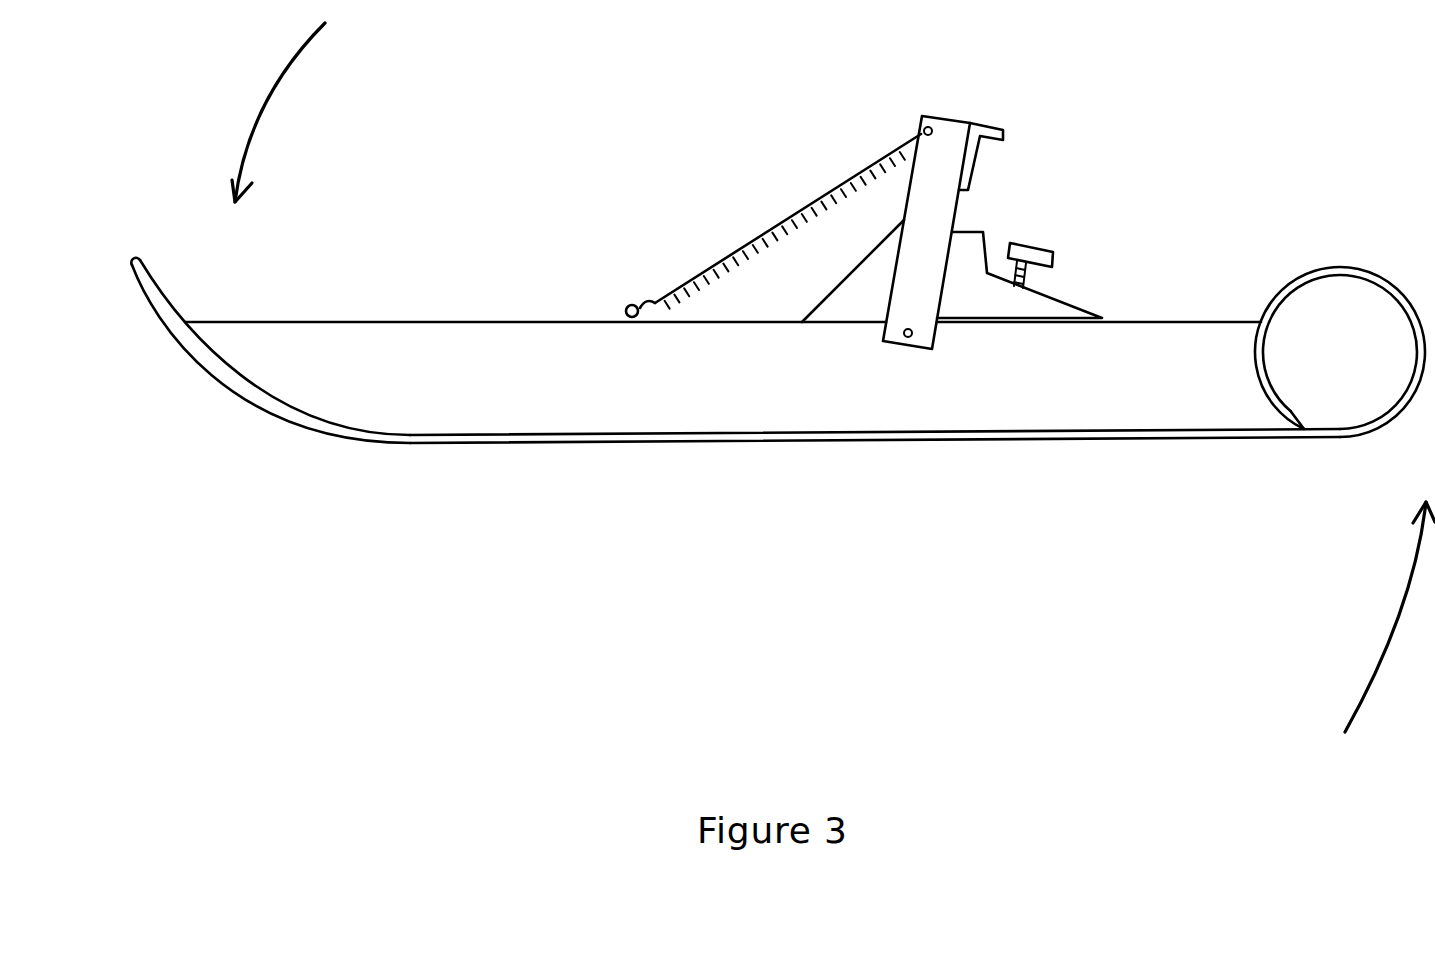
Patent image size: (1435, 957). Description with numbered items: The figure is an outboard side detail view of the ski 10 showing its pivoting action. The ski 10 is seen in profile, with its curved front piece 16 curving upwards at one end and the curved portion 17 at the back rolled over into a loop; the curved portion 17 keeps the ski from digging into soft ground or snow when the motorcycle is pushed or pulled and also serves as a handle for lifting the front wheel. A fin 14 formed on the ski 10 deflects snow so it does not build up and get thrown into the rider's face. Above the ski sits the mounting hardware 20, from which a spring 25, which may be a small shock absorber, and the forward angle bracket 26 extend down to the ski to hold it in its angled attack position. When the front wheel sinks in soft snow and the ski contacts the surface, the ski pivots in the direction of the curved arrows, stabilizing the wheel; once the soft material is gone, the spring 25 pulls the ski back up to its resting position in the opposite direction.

The ski 10 is at (602, 460).
The fin 14 is at (330, 290).
The curved front piece 16 is at (248, 388).
The curved portion 17 is at (1348, 255).
The mounting hardware 20 is at (992, 230).
The spring 25 is at (785, 197).
The forward angle bracket 26 is at (838, 282).